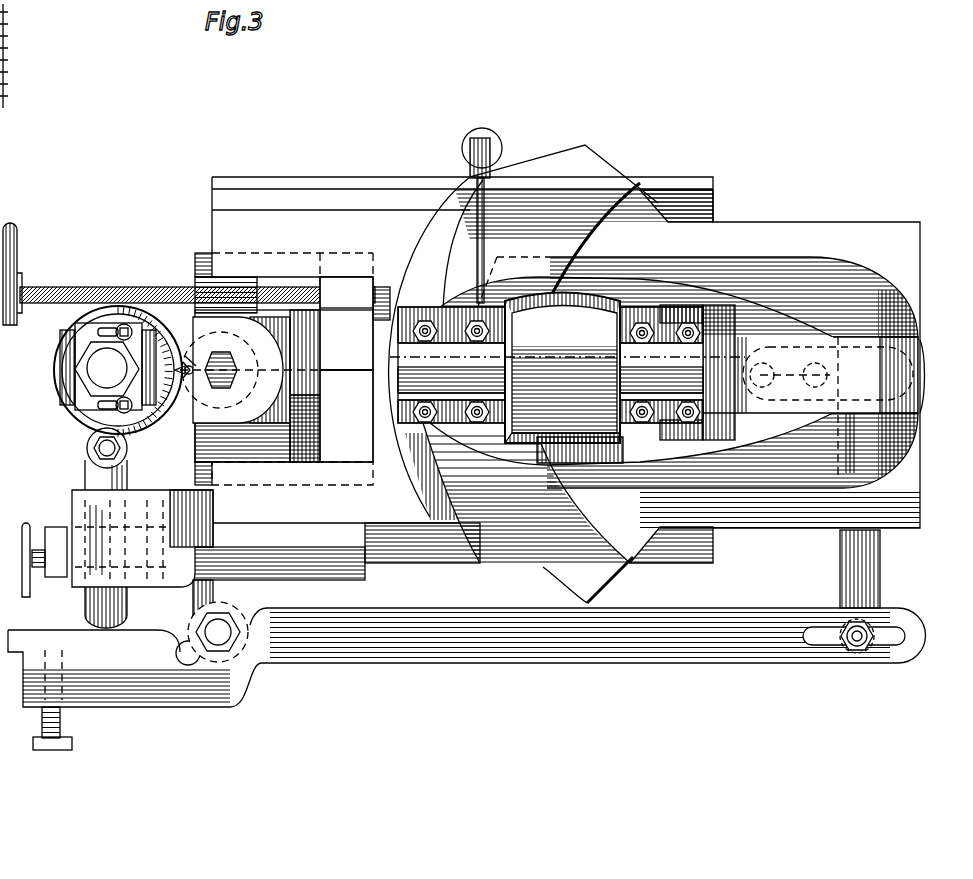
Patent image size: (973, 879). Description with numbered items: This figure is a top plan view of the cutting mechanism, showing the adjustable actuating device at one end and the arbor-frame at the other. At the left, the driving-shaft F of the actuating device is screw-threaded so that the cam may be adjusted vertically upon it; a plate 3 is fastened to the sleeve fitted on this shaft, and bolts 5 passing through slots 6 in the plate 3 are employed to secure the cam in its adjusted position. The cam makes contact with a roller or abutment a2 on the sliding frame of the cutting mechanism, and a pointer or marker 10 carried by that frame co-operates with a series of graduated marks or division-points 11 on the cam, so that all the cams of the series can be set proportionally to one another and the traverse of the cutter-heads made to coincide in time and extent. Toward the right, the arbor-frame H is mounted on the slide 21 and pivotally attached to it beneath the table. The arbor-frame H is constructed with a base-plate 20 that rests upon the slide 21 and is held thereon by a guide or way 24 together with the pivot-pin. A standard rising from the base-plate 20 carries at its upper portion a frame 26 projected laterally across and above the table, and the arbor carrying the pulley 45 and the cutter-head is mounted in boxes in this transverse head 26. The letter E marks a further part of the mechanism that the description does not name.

The plate 3 is at (118, 370).
The bolts 5 is at (133, 406).
The slots 6 is at (102, 409).
The pointer or marker 10 is at (192, 363).
The graduated marks or division-points 11 is at (177, 347).
The base-plate 20 is at (675, 470).
The slide 21 is at (679, 285).
The guide or way 24 is at (523, 365).
The frame 26 is at (564, 448).
The pulley 45 is at (562, 368).
The housing end E is at (823, 385).
The driving-shaft F is at (108, 366).
The arbor-frame H is at (567, 369).
The roller or abutment a2 is at (192, 393).